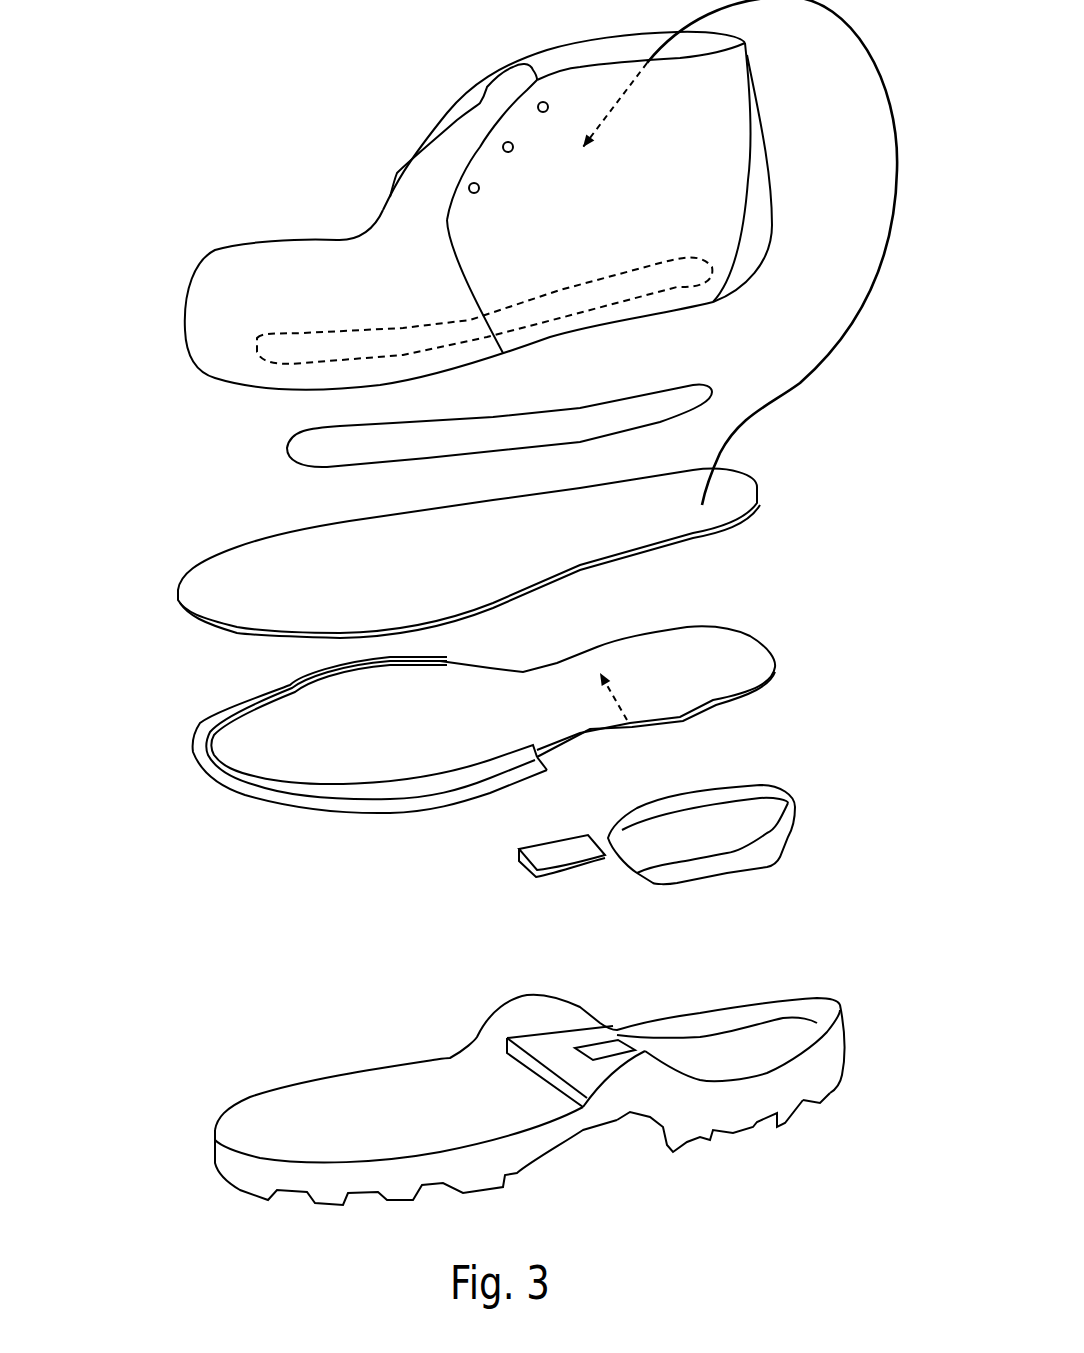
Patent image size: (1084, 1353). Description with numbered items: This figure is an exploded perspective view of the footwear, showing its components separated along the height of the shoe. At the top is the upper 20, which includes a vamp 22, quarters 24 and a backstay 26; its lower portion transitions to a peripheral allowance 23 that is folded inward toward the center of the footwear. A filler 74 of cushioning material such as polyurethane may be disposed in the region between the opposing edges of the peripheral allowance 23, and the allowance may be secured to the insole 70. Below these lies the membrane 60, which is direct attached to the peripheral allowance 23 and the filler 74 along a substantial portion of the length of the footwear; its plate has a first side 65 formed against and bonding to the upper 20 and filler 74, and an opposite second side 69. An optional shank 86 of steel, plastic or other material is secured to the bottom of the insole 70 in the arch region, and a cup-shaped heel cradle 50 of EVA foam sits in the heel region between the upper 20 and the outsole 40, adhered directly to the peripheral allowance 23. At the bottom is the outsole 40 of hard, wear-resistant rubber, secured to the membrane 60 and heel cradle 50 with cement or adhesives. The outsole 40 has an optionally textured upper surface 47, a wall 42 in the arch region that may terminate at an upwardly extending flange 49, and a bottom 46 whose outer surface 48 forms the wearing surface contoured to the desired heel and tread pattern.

The upper 20 is at (752, 75).
The vamp 22 is at (258, 270).
The allowance 23 is at (642, 300).
The quarters 24 is at (713, 137).
The backstay 26 is at (760, 230).
The filler 74 is at (267, 446).
The insole 70 is at (167, 615).
The membrane 60 is at (430, 707).
The first side 65 is at (498, 693).
The second side 69 is at (630, 720).
The heel cradle 50 is at (815, 798).
The shank 86 is at (570, 868).
The outsole 40 is at (566, 1079).
The wall 42 is at (565, 1068).
The upper surface 47 is at (748, 1053).
The flange 49 is at (622, 1085).
The outer surface 48 is at (787, 1123).
The bottom 46 is at (830, 1103).